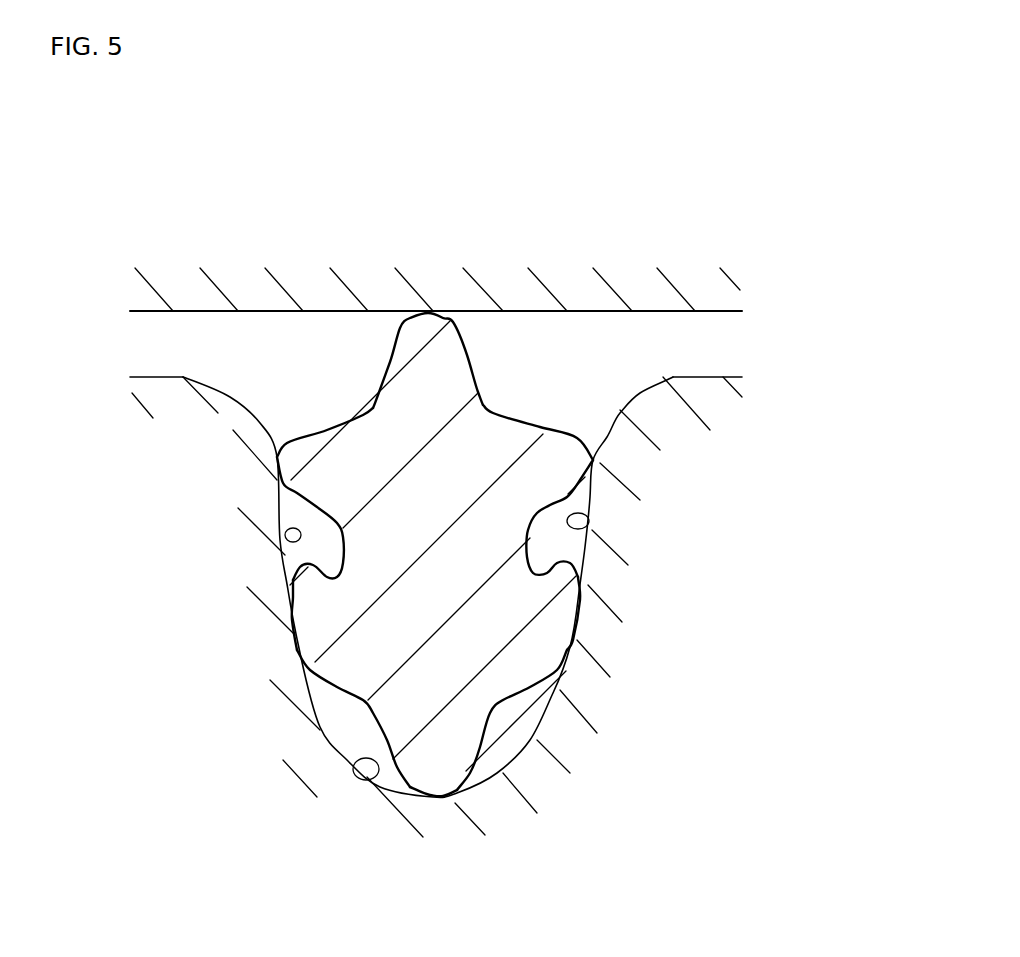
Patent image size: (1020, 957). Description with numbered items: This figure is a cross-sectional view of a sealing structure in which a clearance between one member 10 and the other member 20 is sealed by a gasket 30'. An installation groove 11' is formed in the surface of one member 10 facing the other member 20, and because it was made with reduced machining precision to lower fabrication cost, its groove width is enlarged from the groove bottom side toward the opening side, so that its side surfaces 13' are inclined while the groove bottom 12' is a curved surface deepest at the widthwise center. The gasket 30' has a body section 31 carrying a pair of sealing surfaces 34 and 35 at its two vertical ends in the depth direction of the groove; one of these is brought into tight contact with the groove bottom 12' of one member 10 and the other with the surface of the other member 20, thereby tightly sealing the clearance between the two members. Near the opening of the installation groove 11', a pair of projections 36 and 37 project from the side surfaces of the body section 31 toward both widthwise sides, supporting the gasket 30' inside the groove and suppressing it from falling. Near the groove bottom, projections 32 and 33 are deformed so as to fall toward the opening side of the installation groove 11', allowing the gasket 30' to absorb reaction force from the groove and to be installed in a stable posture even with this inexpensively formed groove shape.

The one member 10 is at (154, 364).
The installation groove 11' is at (428, 493).
The groove bottom 12' is at (343, 810).
The side surfaces 13' is at (439, 533).
The other member 20 is at (727, 324).
The gasket 30' is at (442, 546).
The body section 31 is at (467, 467).
The projection 32 is at (307, 607).
The projection 33 is at (568, 606).
The sealing surface 34 is at (432, 311).
The sealing surface 35 is at (437, 797).
The projection 36 is at (287, 462).
The projection 37 is at (597, 460).